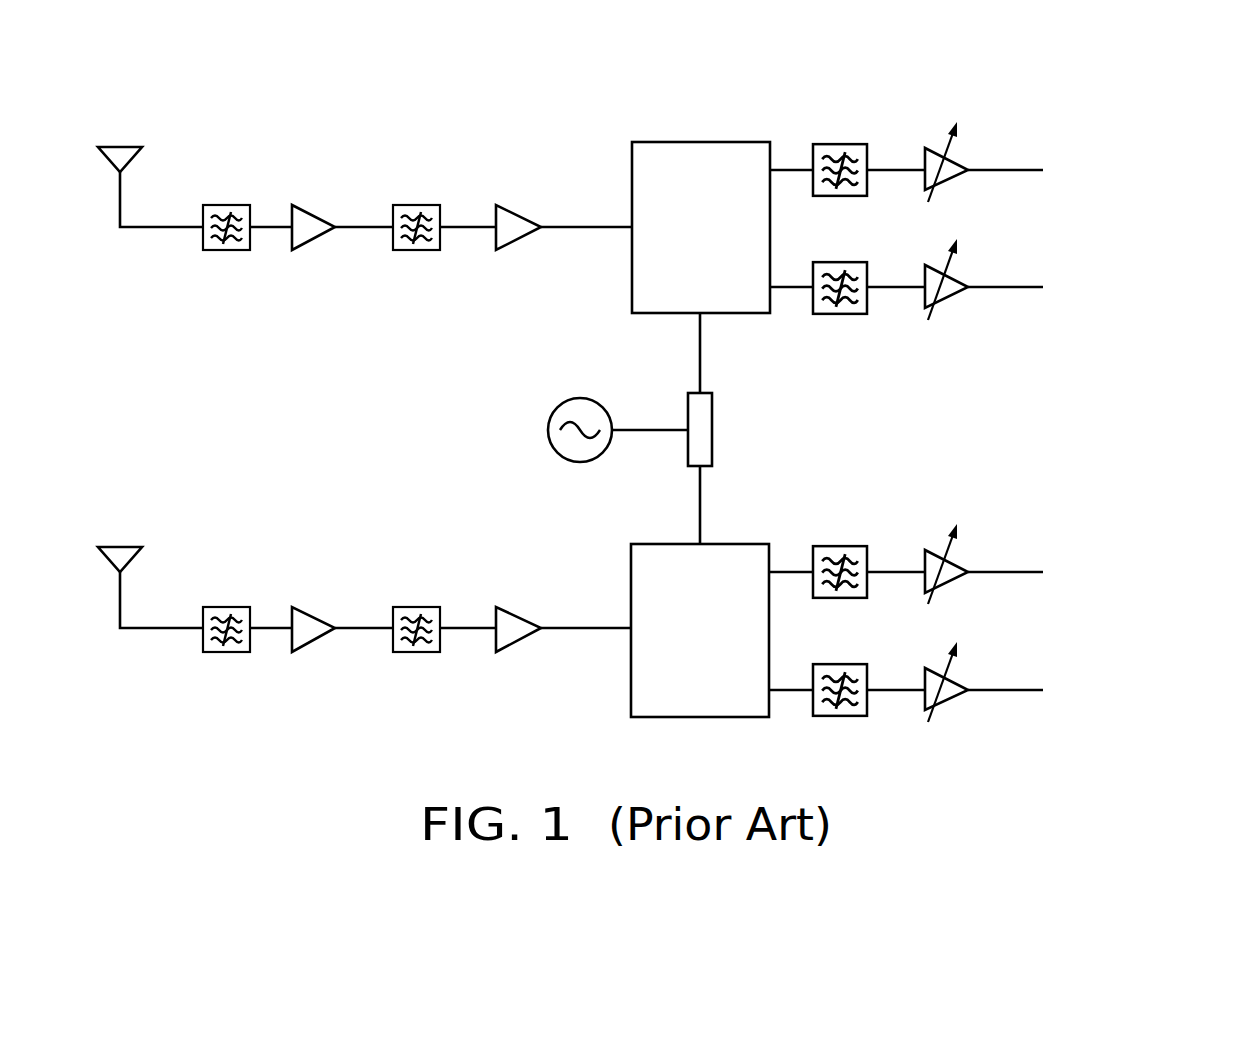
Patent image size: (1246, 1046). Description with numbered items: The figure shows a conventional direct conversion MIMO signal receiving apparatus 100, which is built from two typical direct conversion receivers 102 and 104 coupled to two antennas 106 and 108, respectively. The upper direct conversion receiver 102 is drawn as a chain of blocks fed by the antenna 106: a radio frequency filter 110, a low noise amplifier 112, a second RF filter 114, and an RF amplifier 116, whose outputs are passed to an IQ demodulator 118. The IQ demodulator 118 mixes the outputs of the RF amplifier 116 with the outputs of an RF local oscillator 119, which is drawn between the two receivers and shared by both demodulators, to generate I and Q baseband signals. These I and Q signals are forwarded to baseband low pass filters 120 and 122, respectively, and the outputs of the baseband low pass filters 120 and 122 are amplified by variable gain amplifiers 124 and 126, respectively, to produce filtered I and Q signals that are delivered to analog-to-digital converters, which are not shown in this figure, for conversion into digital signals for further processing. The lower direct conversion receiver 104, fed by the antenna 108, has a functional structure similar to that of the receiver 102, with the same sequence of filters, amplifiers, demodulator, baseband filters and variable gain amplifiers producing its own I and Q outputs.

The MIMO signal receiving apparatus 100 is at (1153, 106).
The direct conversion receiver 102 is at (578, 165).
The direct conversion receiver 104 is at (578, 693).
The antenna 106 is at (110, 162).
The antenna 108 is at (110, 563).
The radio frequency filter 110 is at (229, 204).
The low noise amplifier 112 is at (314, 242).
The RF filter 114 is at (417, 204).
The RF amplifier 116 is at (516, 243).
The IQ demodulator 118 is at (688, 142).
The RF local oscillator 119 is at (716, 426).
The baseband low pass filter 120 is at (841, 143).
The baseband low pass filter 122 is at (838, 317).
The variable gain amplifier 124 is at (950, 186).
The variable gain amplifier 126 is at (950, 304).